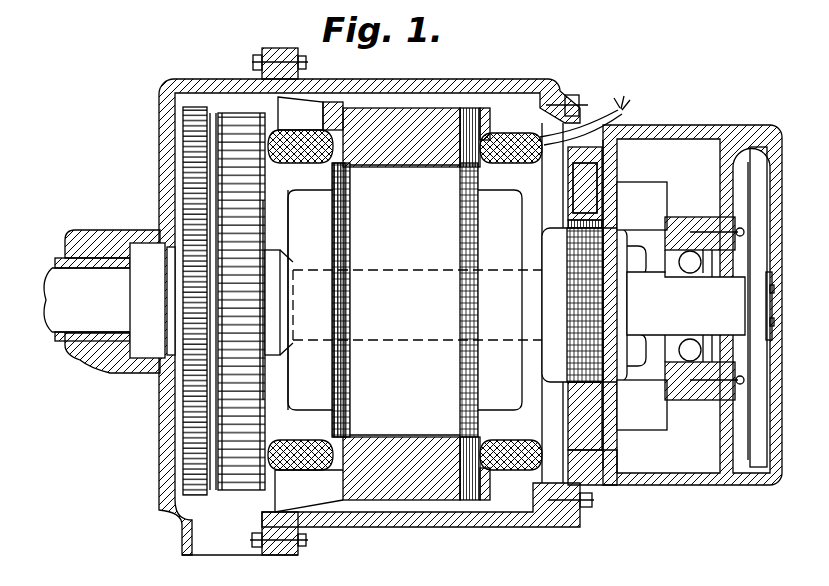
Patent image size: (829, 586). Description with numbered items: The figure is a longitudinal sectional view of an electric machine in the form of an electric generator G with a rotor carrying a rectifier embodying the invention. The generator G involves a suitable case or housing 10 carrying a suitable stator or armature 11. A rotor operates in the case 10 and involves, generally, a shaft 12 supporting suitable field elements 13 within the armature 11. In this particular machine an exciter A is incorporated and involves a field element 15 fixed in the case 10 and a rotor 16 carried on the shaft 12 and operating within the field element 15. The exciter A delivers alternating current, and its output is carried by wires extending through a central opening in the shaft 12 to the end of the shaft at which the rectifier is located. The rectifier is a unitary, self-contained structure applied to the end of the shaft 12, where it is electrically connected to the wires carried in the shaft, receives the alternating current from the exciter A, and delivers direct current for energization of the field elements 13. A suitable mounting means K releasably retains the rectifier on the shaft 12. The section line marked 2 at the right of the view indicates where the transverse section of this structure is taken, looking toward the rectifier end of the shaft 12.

The generator G is at (452, 78).
The case 10 is at (439, 523).
The armature 11 is at (468, 106).
The field elements 13 is at (457, 300).
The rotor 16 is at (548, 368).
The exciter A is at (607, 205).
The field element 15 is at (587, 416).
The shaft 12 is at (686, 303).
The mounting means K is at (764, 312).
The section line 2- 2 is at (772, 86).